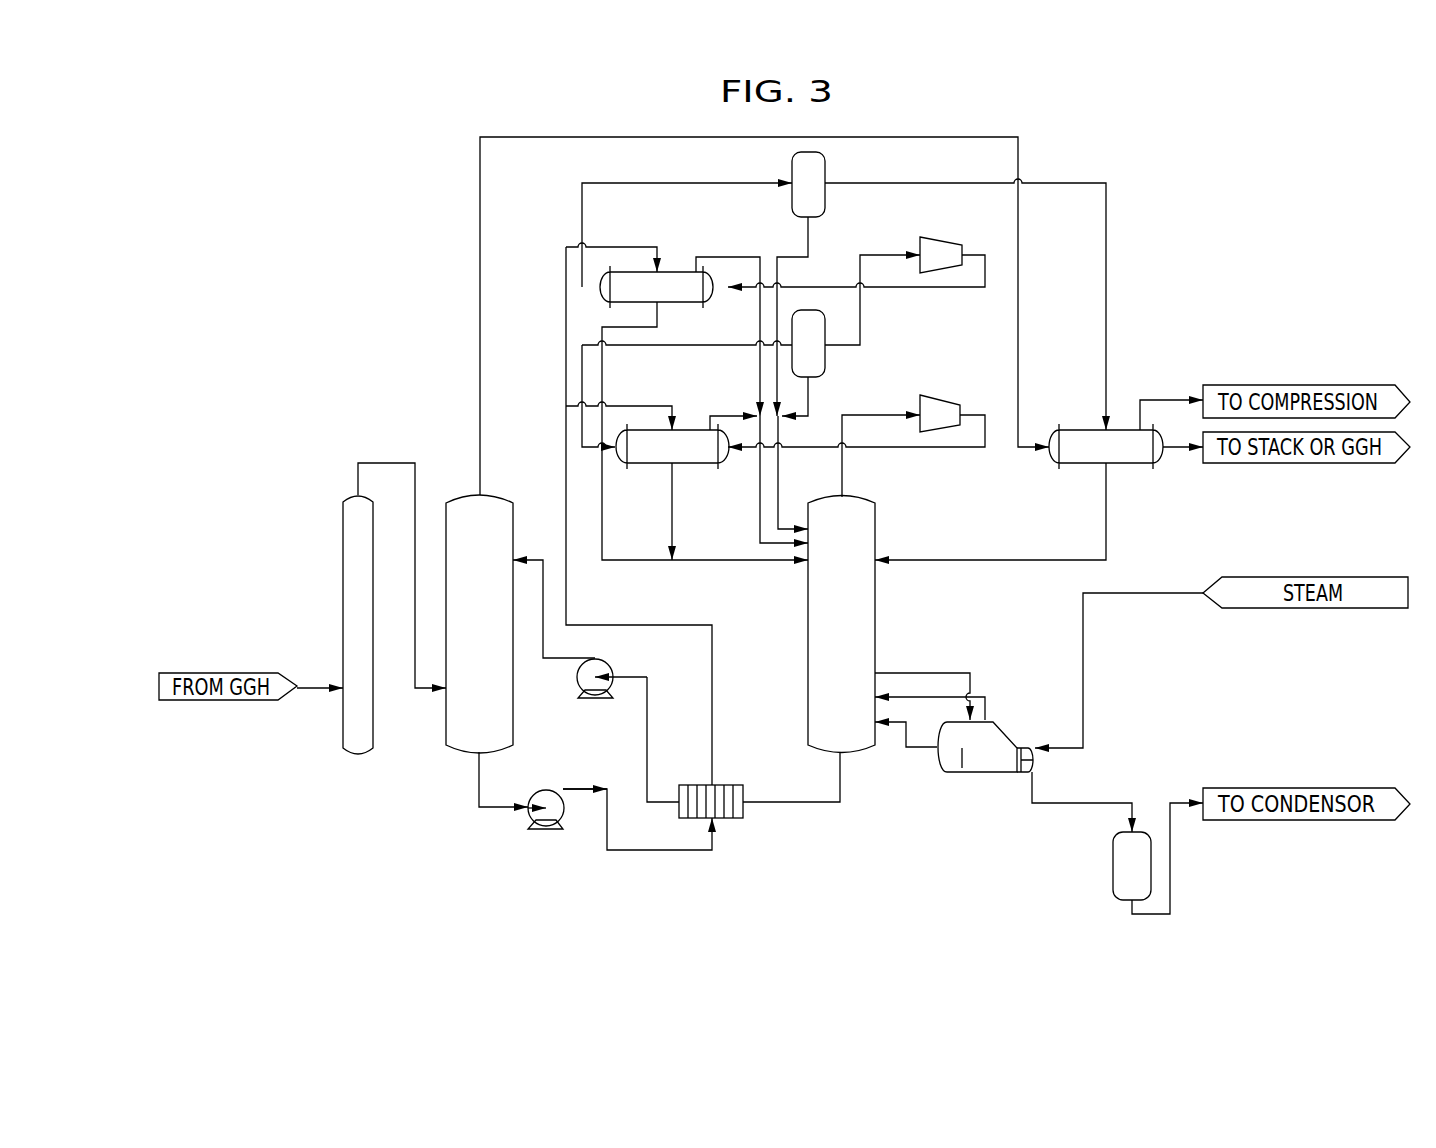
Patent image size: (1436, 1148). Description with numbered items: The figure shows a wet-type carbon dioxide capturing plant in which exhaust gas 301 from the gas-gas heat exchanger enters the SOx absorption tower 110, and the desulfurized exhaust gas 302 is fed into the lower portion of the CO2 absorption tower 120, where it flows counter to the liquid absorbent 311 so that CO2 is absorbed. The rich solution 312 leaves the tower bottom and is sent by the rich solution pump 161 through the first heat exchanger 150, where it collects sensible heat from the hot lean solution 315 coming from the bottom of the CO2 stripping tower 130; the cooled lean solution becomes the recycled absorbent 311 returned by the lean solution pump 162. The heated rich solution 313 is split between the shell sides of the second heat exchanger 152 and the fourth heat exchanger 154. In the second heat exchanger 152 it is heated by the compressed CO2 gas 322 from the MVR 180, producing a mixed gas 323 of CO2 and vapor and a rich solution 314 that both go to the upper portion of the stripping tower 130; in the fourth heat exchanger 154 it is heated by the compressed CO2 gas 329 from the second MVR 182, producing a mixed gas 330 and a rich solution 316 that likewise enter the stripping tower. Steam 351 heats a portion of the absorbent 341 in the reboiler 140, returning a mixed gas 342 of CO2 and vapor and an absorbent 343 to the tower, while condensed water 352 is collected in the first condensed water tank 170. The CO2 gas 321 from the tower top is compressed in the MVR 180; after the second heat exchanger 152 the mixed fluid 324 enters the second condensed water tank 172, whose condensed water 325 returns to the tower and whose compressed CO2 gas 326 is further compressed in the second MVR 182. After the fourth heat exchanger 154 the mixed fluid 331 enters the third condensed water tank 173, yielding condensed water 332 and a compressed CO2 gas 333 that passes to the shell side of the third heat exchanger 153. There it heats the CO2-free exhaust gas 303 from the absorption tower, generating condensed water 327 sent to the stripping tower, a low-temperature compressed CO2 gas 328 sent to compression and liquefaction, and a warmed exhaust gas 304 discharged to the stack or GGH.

The SOx absorption tower 110 is at (358, 757).
The CO2 absorption tower 120 is at (505, 495).
The CO2 stripping tower 130 is at (808, 648).
The reboiler 140 is at (988, 775).
The first heat exchanger 150 is at (697, 783).
The second heat exchanger 152 is at (650, 465).
The third heat exchanger 153 is at (1080, 465).
The fourth heat exchanger 154 is at (677, 303).
The rich solution pump 161 is at (546, 830).
The lean solution pump 162 is at (595, 698).
The first condensed water tank 170 is at (1113, 865).
The second condensed water tank 172 is at (826, 357).
The third condensed water tank 173 is at (826, 170).
The mechanical vapor recompressor 180 is at (943, 395).
The second MVR 182 is at (941, 237).
The exhaust gas 301 is at (307, 683).
The exhaust gas including CO2 302 is at (392, 460).
The exhaust gas removed of CO2 303 is at (530, 140).
The exhaust gas having an increased temperature 304 is at (1175, 450).
The liquid absorbent 311 is at (537, 555).
The rich solution 312 is at (478, 793).
The heated rich solution 313 is at (613, 620).
The rich solution having CO2 not yet separated 314 is at (674, 503).
The lean solution 315 is at (777, 800).
The rich solution having CO2 not yet separated 316 is at (602, 530).
The CO2 gas 321 is at (843, 475).
The compressed CO2 gas 322 is at (947, 450).
The mixed gas of CO2 gas and vapor 323 is at (730, 412).
The mixed fluid 324 is at (660, 350).
The condensed water 325 is at (810, 405).
The compressed CO2 gas removed of condensed water 326 is at (862, 312).
The condensed water 327 is at (1000, 553).
The compressed CO2 gas 328 is at (1161, 398).
The compressed CO2 gas 329 is at (952, 290).
The mixed gas of CO2 gas and vapor 330 is at (725, 255).
The mixed fluid 331 is at (643, 185).
The condensed water 332 is at (808, 235).
The compressed CO2 gas removed of condensed water 333 is at (1054, 183).
The absorbent 341 is at (925, 670).
The mixed gas of CO2 and vapor 342 is at (985, 700).
The absorbent removed of CO2 343 is at (913, 750).
The steam 351 is at (1155, 590).
The condensed water 352 is at (1103, 800).